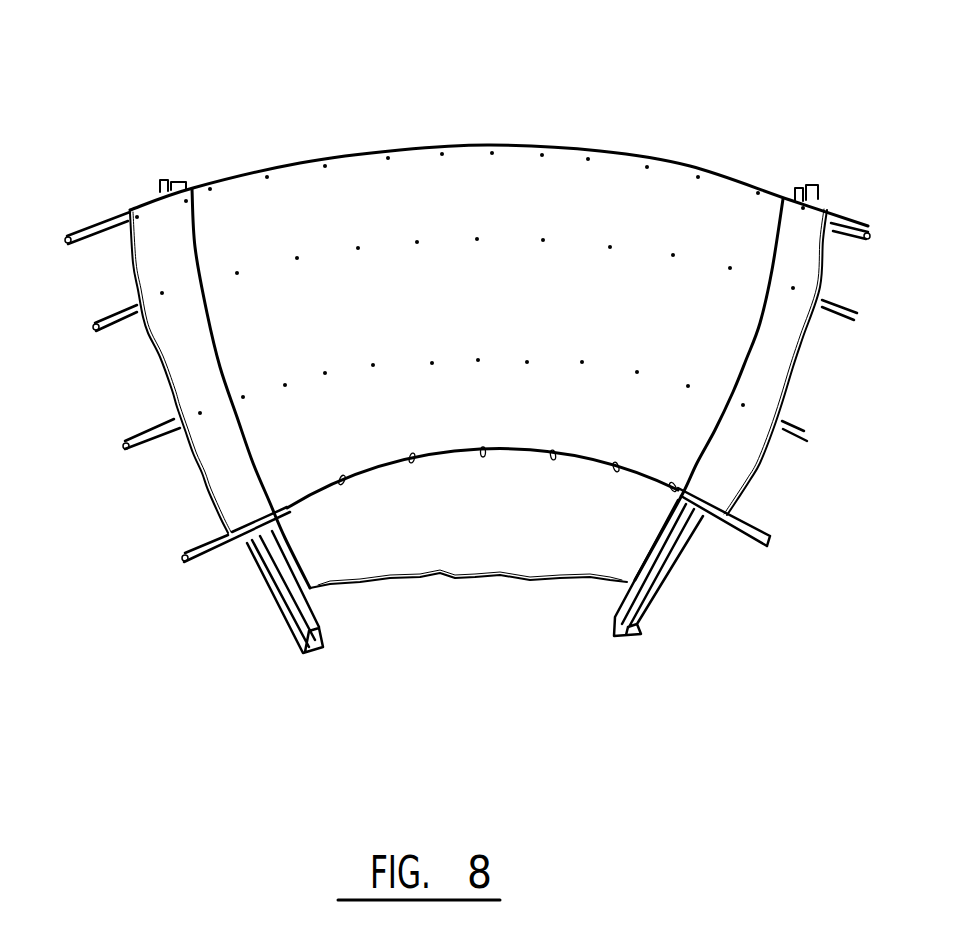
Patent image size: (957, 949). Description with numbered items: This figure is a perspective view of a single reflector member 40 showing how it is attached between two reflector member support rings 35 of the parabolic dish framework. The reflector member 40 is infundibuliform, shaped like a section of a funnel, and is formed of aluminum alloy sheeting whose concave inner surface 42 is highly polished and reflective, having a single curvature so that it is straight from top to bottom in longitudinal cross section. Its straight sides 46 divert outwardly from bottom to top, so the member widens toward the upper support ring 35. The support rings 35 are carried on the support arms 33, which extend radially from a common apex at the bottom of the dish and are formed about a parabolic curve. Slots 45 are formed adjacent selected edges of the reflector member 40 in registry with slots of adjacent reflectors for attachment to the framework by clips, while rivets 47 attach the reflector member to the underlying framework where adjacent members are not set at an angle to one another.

The support arm 33 is at (284, 603).
The reflector member support ring 35 is at (88, 317).
The reflector member 40 is at (337, 133).
The concave inner surface 42 is at (512, 177).
The slot 45 is at (347, 490).
The straight side 46 is at (198, 246).
The rivet 47 is at (419, 246).